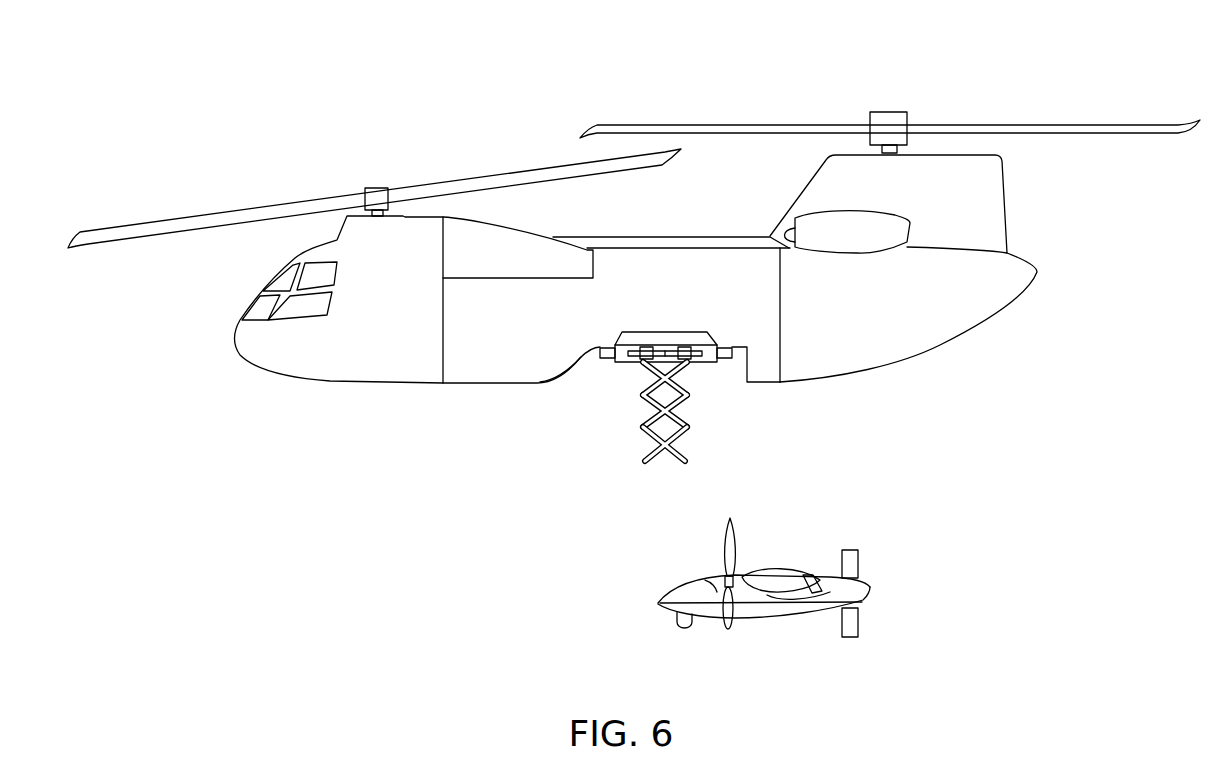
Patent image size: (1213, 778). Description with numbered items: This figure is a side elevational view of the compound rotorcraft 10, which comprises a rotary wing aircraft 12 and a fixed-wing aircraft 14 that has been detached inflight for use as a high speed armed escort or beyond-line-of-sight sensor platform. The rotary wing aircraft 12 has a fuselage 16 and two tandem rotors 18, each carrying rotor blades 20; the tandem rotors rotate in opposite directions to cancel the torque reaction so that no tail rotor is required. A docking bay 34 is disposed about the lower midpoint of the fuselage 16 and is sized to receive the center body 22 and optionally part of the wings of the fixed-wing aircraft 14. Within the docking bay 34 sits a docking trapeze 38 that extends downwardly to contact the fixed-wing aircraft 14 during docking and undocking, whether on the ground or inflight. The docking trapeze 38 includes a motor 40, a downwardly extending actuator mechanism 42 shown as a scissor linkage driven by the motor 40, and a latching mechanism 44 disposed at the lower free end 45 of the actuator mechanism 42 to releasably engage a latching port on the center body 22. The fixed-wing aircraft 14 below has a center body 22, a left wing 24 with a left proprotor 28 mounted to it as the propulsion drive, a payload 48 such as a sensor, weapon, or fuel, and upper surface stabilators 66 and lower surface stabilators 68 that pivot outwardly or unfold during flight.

The compound rotorcraft 10 is at (221, 89).
The rotary wing aircraft 12 is at (237, 366).
The fixed-wing aircraft 14 is at (628, 591).
The fuselage 16 is at (478, 362).
The rotor 18 is at (375, 188).
The rotor blades 20 is at (267, 205).
The center body 22 is at (685, 592).
The left wing 24 is at (777, 570).
The left proprotor 28 is at (715, 582).
The docking bay 34 is at (565, 363).
The docking trapeze 38 is at (626, 403).
The motor 40 is at (683, 333).
The actuator mechanism 42 is at (680, 402).
The latching mechanism 44 is at (647, 465).
The lower free end 45 is at (643, 458).
The payloads 48 is at (675, 620).
The upper surface stabilators 66 is at (858, 557).
The lower surface stabilators 68 is at (858, 617).